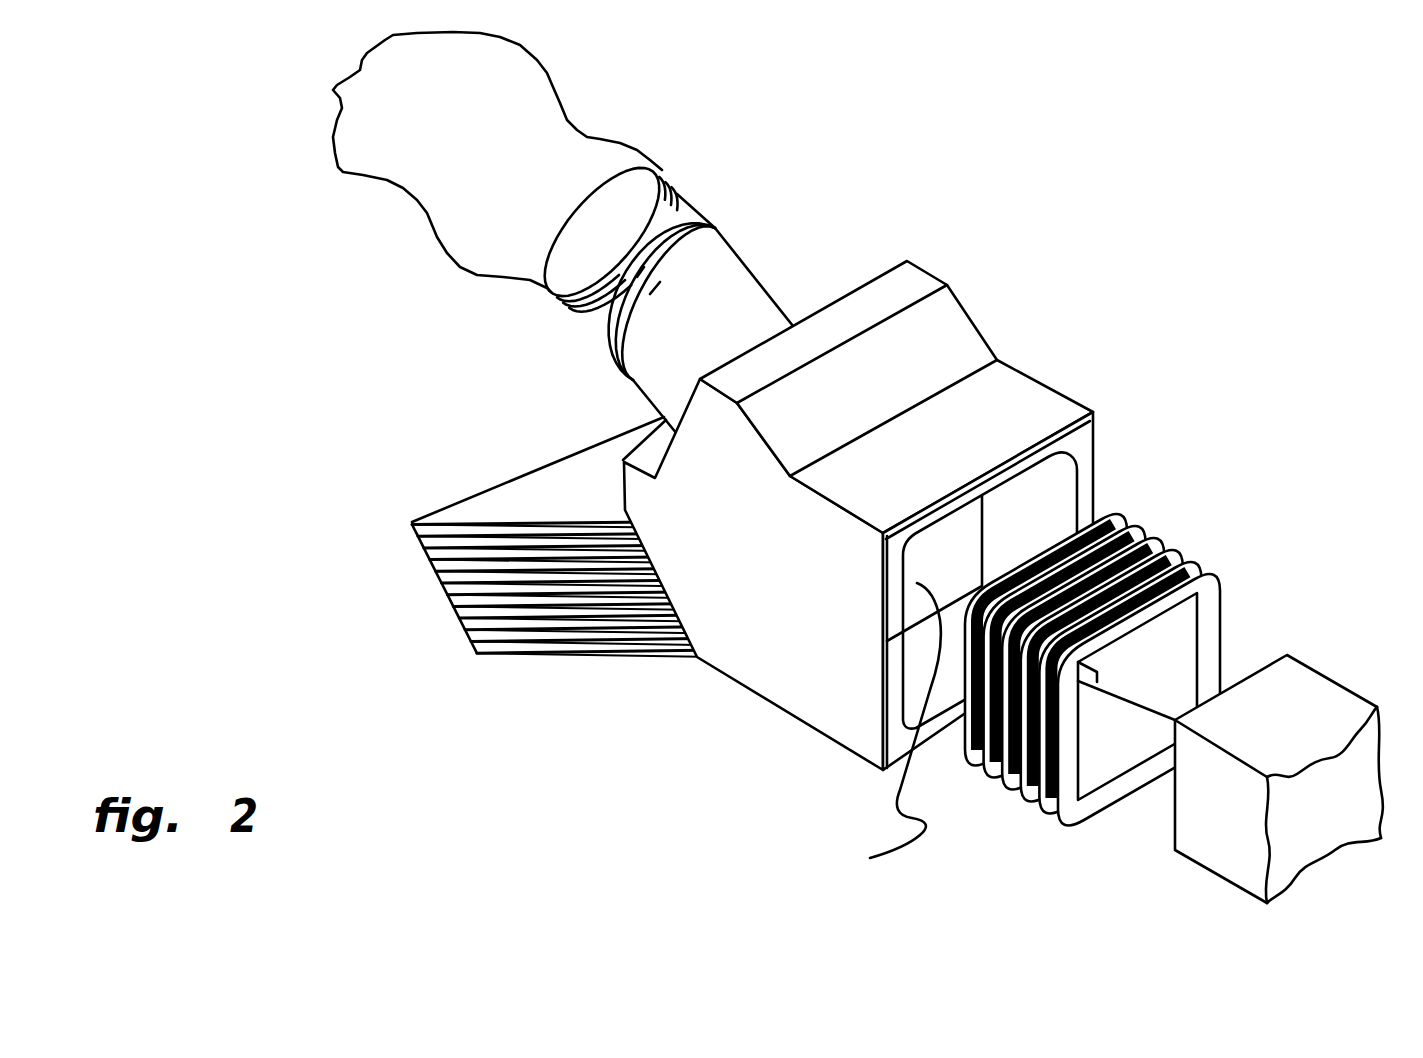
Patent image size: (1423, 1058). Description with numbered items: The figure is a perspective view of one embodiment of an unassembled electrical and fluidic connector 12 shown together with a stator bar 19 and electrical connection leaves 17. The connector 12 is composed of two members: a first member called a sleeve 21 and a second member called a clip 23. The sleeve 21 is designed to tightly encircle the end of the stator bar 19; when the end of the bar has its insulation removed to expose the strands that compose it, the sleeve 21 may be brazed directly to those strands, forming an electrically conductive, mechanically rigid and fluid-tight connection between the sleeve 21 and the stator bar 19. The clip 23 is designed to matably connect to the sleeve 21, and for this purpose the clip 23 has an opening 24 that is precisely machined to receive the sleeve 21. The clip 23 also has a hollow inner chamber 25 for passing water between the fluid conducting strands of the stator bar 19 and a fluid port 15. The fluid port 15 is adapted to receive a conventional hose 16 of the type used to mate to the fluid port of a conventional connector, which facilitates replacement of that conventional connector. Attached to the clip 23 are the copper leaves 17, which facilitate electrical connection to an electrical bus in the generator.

The electrical and fluidic connector 12 is at (958, 553).
The fluid port 15 is at (748, 297).
The hose 16 is at (461, 153).
The electrical connection leaves 17 is at (517, 648).
The stator bar 19 is at (1313, 687).
The sleeve 21 is at (1175, 543).
The clip 23 is at (1007, 388).
The opening 24 is at (1050, 487).
The hollow inner chamber 25 is at (878, 731).